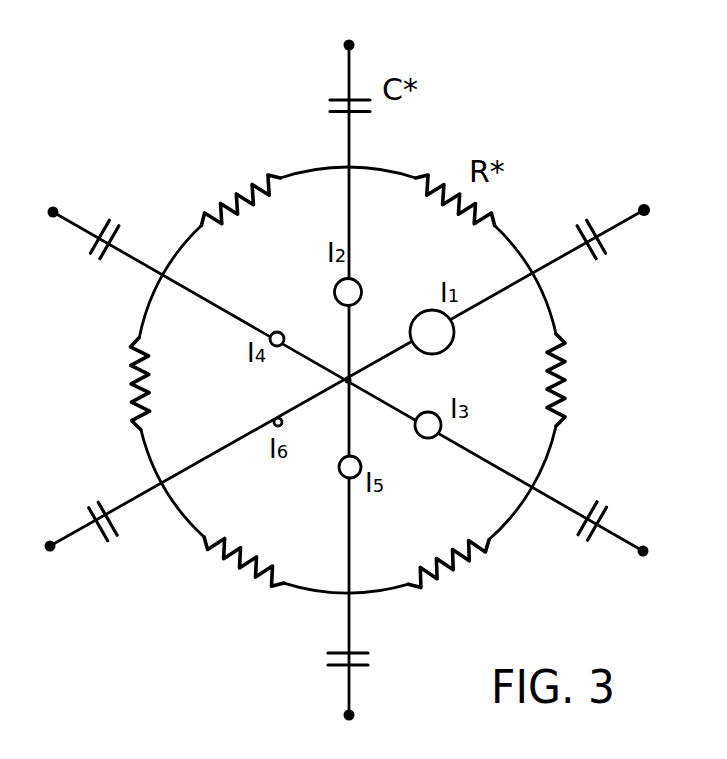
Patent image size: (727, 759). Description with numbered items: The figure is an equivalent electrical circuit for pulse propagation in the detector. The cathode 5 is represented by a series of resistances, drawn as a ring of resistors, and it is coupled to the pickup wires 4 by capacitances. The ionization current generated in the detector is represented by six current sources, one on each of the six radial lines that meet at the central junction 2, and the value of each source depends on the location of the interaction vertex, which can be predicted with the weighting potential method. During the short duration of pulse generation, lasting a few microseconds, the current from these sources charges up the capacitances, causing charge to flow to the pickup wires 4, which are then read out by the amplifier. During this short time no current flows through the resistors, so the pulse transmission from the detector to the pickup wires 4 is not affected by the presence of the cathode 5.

The center node of star network 2 is at (346, 385).
The pickup wires 4 is at (644, 208).
The cathode 5 is at (558, 308).